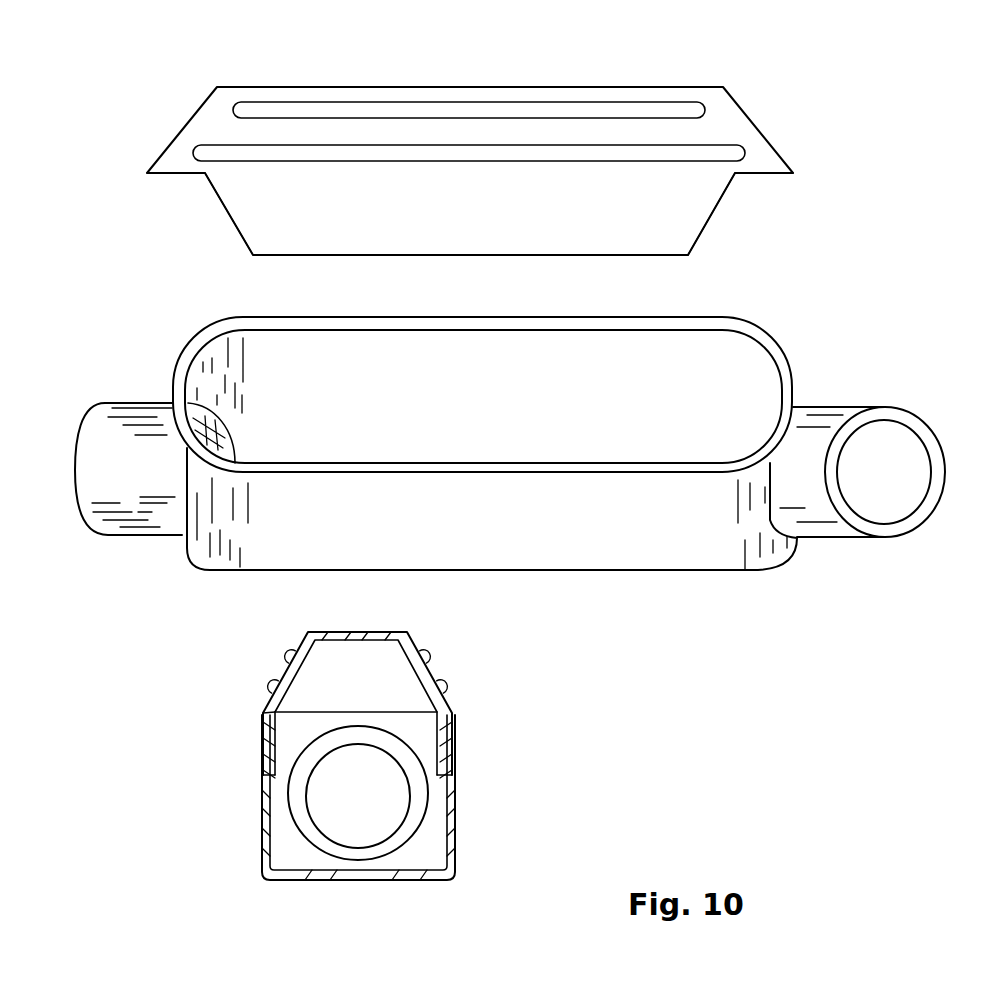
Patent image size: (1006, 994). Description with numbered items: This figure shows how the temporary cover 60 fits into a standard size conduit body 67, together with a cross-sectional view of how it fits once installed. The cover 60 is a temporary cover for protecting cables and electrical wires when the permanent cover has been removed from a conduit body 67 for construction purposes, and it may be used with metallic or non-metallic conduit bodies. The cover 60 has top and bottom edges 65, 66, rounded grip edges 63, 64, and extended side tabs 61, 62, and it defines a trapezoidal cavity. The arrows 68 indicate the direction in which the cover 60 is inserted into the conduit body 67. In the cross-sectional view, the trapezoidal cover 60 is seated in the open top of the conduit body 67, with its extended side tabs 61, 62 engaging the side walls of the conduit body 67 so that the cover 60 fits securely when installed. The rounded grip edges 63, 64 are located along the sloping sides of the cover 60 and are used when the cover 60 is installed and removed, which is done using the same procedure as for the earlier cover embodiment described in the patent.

The cover 60 is at (685, 77).
The extended side tab 61 is at (267, 772).
The extended side tab 62 is at (418, 258).
The rounded grip edge 63 is at (288, 654).
The rounded grip edge 64 is at (372, 100).
The top edge 65 is at (147, 173).
The bottom edge 66 is at (793, 173).
The conduit body 67 is at (562, 577).
The arrows 68 is at (167, 337).